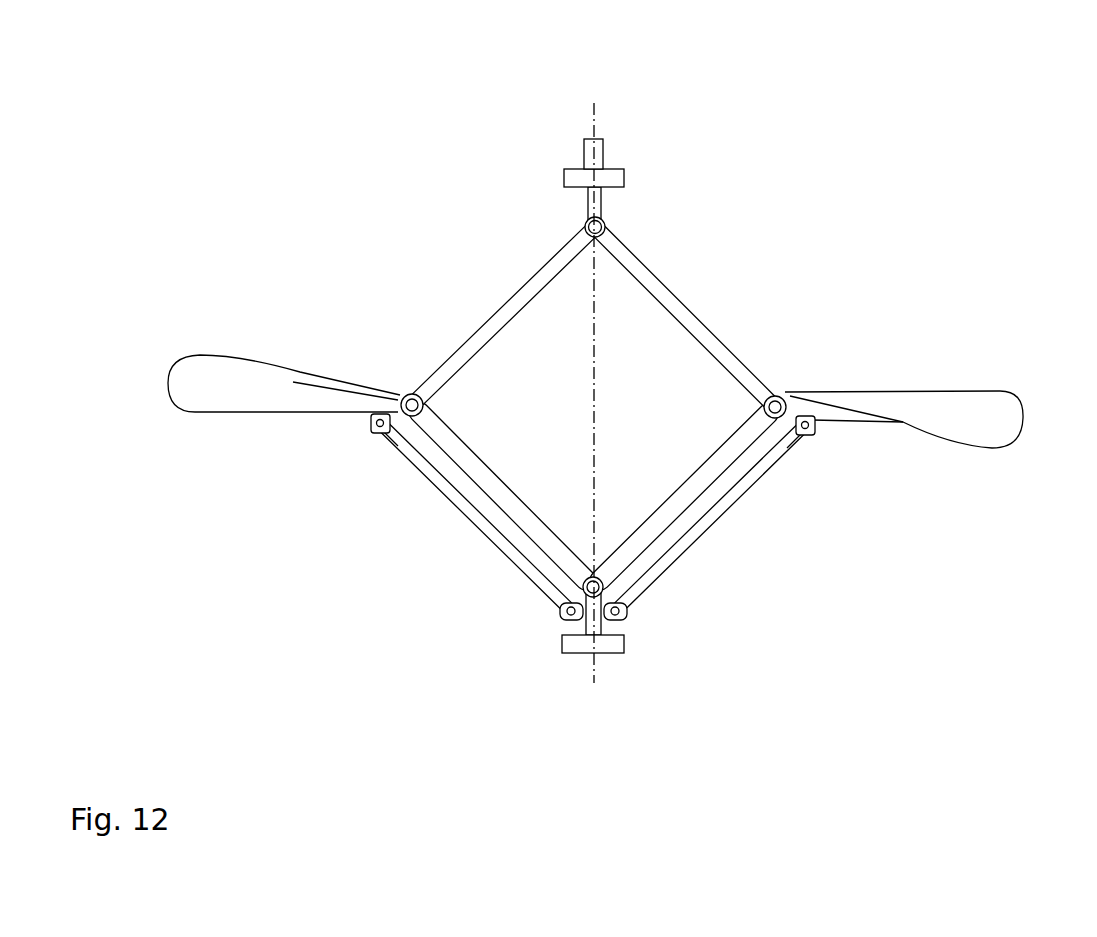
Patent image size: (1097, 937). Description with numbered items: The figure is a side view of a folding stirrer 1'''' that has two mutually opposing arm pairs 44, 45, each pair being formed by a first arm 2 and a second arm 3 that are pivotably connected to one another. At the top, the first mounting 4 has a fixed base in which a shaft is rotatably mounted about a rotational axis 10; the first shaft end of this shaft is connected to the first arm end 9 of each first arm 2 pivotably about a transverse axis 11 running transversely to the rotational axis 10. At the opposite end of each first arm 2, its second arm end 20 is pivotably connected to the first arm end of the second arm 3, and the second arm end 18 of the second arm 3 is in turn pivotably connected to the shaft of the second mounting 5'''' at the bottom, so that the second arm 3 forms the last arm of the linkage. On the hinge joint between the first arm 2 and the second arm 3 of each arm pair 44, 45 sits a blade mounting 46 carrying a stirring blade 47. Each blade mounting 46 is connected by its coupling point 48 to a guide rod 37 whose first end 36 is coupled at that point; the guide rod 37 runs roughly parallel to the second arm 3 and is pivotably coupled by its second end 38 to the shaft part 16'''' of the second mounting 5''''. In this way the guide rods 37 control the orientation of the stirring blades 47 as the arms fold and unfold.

The stirrer 1'''' is at (584, 397).
The first arm 2 is at (490, 332).
The second arm 3 is at (480, 470).
The first mounting 4 is at (617, 177).
The second mounting 5'''' is at (656, 686).
The first arm end 9 is at (580, 245).
The rotational axis 10 is at (600, 128).
The transverse axis 11 is at (584, 226).
The shaft part 16'''' is at (534, 677).
The second arm end 18 is at (585, 588).
The second arm end 20 is at (403, 393).
The first end 36 is at (395, 438).
The guide rod 37 is at (477, 520).
The second end 38 is at (553, 602).
The arm pair 44 is at (470, 247).
The arm pair 45 is at (713, 252).
The blade mounting 46 is at (377, 420).
The stirring blade 47 is at (225, 392).
The coupling point 48 is at (378, 428).